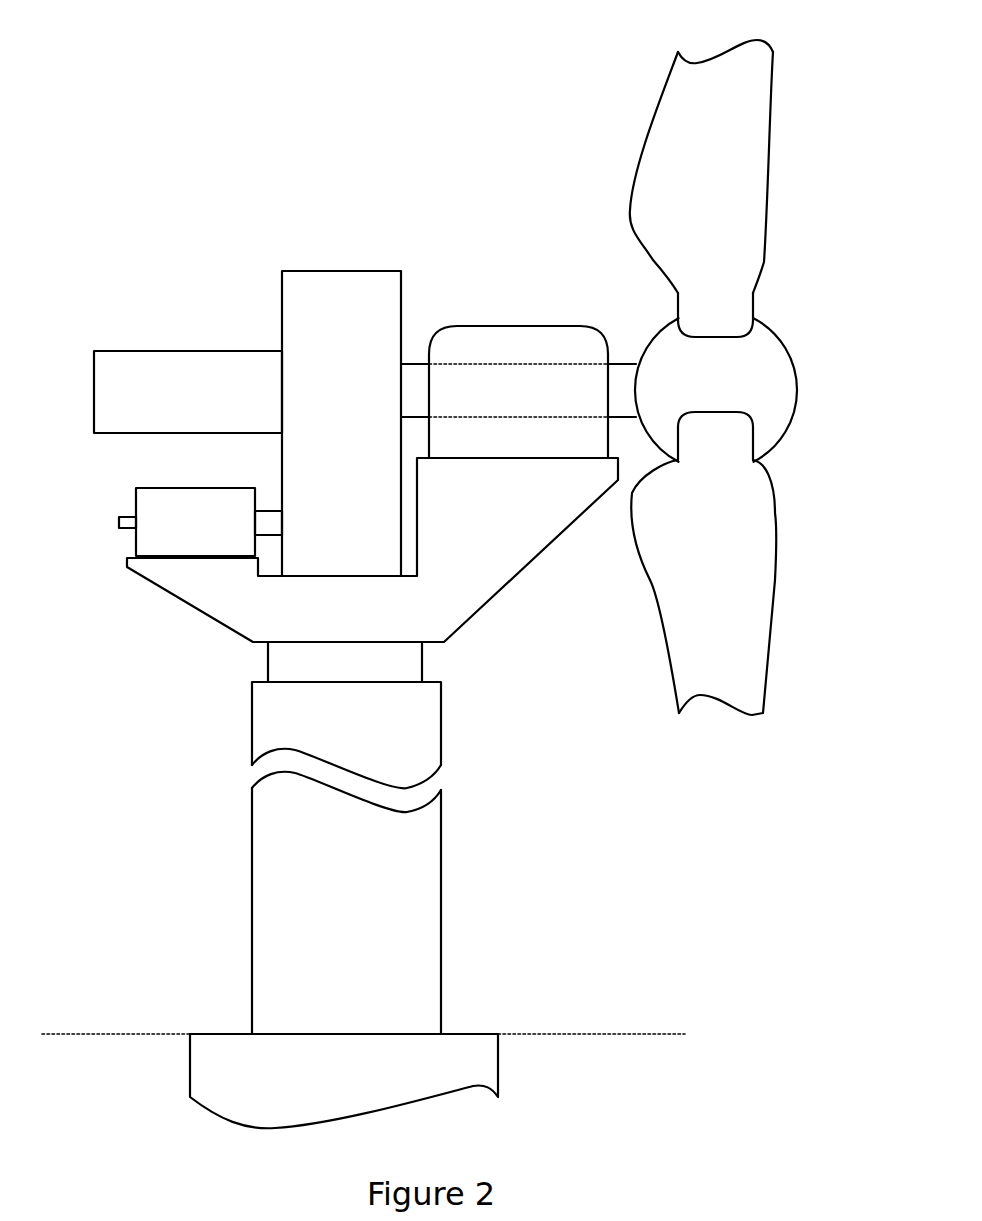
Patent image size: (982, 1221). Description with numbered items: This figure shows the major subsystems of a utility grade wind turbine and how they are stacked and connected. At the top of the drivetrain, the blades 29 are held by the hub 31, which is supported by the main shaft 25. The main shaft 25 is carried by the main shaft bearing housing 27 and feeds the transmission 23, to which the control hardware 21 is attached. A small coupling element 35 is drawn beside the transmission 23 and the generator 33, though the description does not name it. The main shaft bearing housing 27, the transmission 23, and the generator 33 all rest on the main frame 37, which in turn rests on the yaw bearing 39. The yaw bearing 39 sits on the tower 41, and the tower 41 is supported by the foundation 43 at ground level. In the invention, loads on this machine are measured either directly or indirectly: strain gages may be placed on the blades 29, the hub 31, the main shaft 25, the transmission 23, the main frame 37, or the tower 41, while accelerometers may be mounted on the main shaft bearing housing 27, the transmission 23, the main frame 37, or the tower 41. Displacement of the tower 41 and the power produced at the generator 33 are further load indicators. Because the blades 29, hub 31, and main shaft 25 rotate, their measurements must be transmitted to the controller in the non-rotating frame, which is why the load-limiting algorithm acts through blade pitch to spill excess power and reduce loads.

The control hardware 21 is at (161, 370).
The transmission 23 is at (340, 290).
The main shaft 25 is at (413, 380).
The main shaft bearing housing 27 is at (529, 343).
The blades 29 is at (763, 222).
The hub 31 is at (775, 372).
The generator 33 is at (148, 502).
The coupling 35 is at (269, 517).
The main frame 37 is at (422, 610).
The yaw bearing 39 is at (290, 663).
The tower 41 is at (452, 713).
The foundation 43 is at (247, 1057).